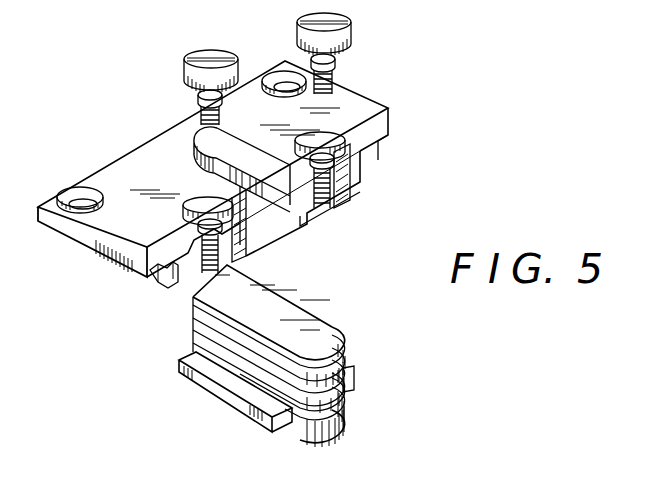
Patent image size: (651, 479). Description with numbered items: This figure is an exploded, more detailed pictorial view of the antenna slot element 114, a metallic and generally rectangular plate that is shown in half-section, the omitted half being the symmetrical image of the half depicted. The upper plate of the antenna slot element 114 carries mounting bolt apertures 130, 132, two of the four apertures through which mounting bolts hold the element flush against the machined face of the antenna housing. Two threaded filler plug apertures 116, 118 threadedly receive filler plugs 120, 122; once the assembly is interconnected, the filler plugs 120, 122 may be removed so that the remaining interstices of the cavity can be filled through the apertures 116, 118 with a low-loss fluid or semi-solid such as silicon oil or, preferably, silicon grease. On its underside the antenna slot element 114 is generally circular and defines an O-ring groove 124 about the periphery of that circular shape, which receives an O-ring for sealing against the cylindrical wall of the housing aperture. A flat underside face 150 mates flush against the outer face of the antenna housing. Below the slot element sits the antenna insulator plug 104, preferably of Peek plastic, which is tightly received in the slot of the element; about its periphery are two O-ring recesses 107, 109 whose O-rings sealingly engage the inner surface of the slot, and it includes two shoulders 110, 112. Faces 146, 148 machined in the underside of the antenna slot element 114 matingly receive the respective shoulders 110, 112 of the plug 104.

The antenna insulator plug 104 is at (300, 320).
The O-ring recess 107 is at (352, 372).
The O-ring recess 109 is at (352, 396).
The shoulder 110 is at (255, 395).
The shoulder 112 is at (354, 378).
The antenna slot element 114 is at (251, 177).
The threaded filler plug aperture 116 is at (204, 198).
The threaded filler plug aperture 118 is at (360, 181).
The filler plug 120 is at (185, 58).
The filler plug 122 is at (352, 26).
The O-ring groove 124 is at (170, 289).
The mounting bolt aperture 130 is at (80, 190).
The mounting bolt aperture 132 is at (286, 72).
The face 146 is at (246, 240).
The face 148 is at (300, 216).
The flat underside face 150 is at (383, 142).